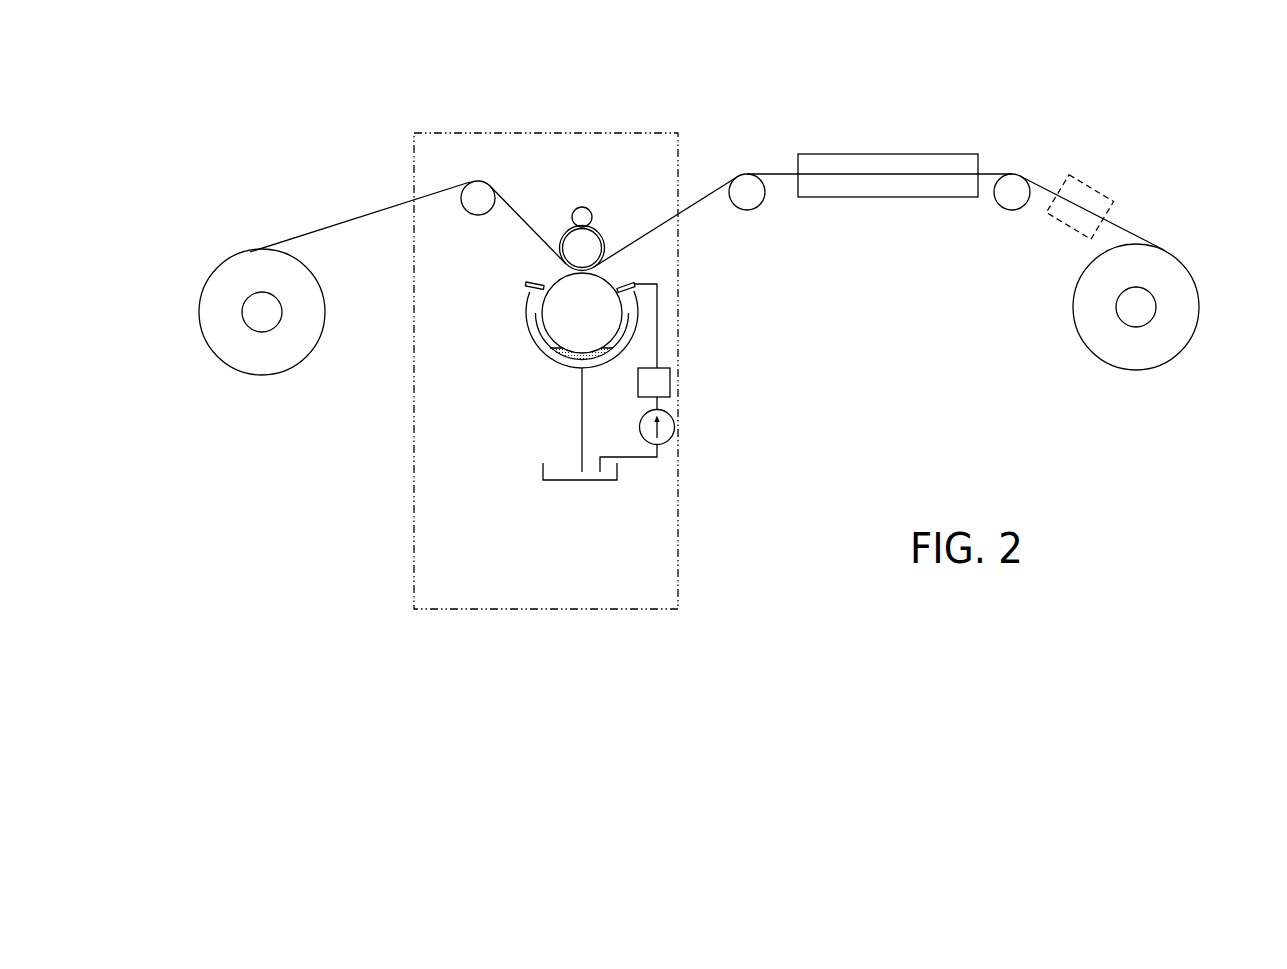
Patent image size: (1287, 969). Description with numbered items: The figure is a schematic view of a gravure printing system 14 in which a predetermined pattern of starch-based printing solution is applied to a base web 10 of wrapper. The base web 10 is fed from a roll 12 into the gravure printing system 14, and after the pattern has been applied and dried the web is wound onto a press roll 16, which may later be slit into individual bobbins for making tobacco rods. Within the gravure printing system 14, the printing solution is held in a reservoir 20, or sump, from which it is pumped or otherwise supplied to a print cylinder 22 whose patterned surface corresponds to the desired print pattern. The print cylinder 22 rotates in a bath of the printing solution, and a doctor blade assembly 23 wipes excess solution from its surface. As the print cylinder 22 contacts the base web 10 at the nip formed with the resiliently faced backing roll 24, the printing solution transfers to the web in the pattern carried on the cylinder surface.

The base web 10 is at (373, 208).
The roll 12 is at (238, 343).
The gravure printing system 14 is at (581, 609).
The press roll 16 is at (1148, 270).
The reservoir 20 is at (575, 481).
The print cylinder 22 is at (568, 327).
The doctor blade assembly 23 is at (526, 284).
The backing roll 24 is at (573, 247).